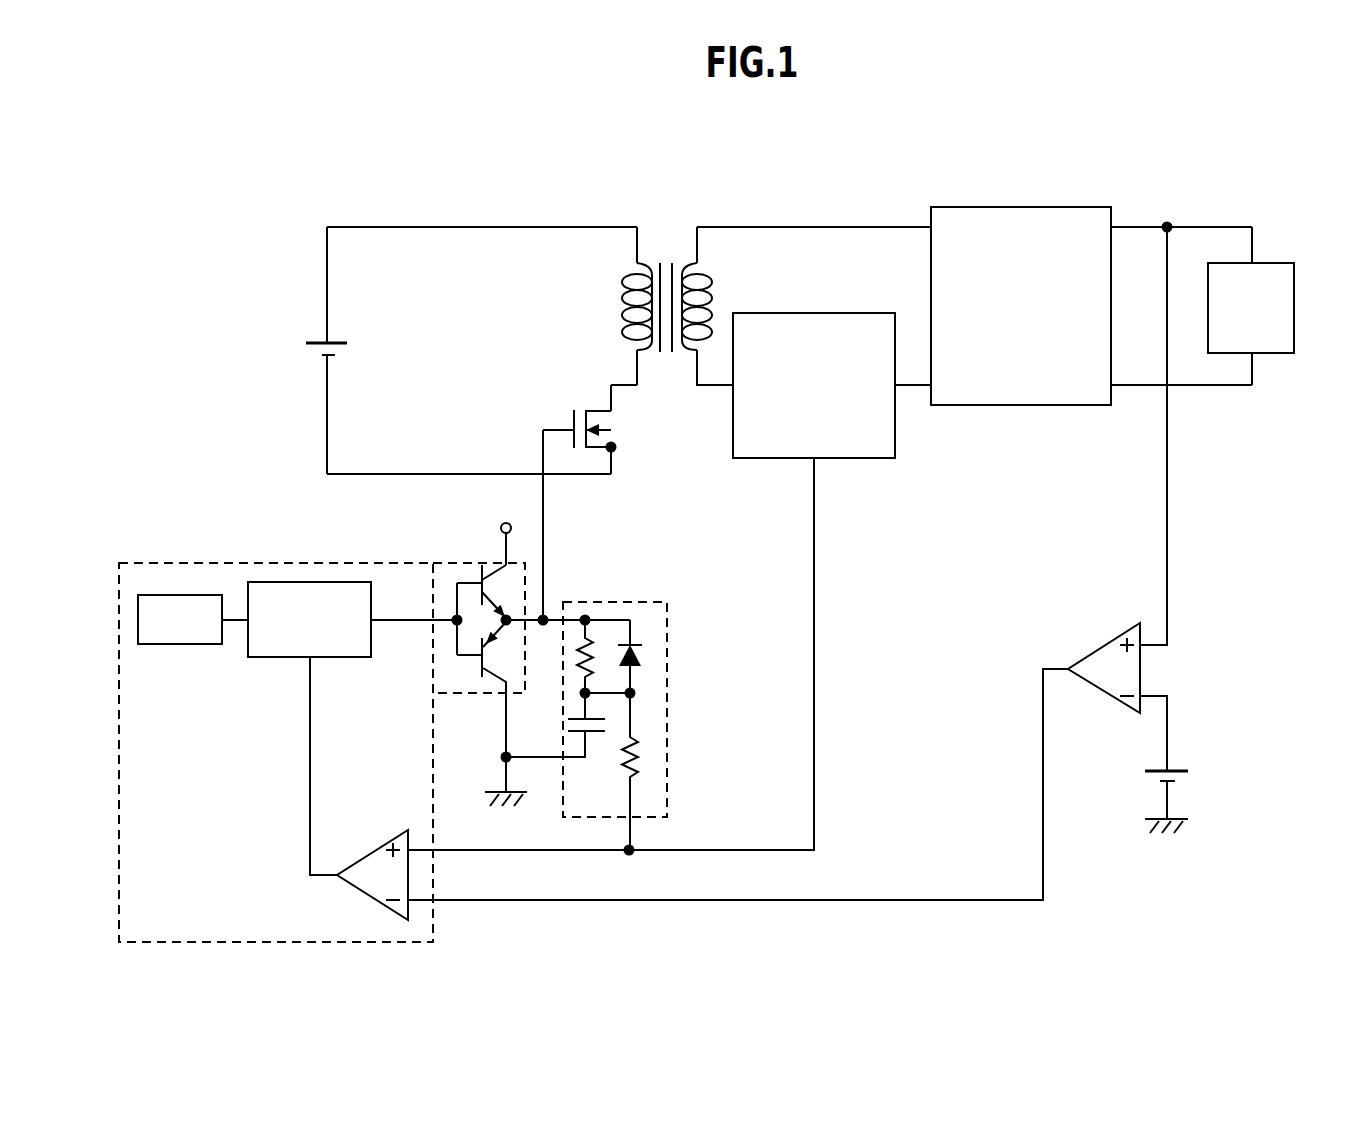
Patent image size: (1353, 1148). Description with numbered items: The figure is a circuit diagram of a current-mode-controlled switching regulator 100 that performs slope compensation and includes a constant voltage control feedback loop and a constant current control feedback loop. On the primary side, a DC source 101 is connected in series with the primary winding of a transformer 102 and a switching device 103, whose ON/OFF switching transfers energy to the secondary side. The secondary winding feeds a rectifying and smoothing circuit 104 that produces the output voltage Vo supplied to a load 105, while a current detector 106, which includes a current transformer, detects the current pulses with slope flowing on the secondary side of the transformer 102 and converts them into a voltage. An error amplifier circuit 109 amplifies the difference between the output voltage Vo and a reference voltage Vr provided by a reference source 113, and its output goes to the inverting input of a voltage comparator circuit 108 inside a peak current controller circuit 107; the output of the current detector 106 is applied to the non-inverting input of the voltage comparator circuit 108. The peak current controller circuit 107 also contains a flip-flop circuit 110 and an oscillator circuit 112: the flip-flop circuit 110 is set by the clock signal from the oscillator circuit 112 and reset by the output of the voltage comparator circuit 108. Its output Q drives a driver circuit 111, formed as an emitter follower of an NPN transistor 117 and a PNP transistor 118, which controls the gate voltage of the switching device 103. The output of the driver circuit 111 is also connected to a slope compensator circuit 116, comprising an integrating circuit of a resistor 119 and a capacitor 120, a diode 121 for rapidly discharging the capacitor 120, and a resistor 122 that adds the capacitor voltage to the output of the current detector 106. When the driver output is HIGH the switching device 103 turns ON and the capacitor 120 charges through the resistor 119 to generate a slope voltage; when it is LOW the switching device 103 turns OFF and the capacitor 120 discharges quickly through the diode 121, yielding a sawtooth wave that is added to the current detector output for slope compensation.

The switching regulator 100 is at (941, 131).
The DC power source 101 is at (306, 341).
The transformer 102 is at (657, 262).
The switching device 103 is at (583, 412).
The rectifying and smoothing circuit 104 is at (1027, 207).
The load 105 is at (1275, 263).
The current detector 106 is at (813, 312).
The peak current controller circuit 107 is at (177, 577).
The voltage comparator circuit 108 is at (369, 849).
The error amplifier circuit 109 is at (1095, 646).
The flip-flop circuit 110 is at (282, 660).
The driver circuit 111 is at (446, 585).
The oscillator circuit 112 is at (183, 646).
The reference voltage source 113 is at (1180, 770).
The slope compensator circuit 116 is at (637, 598).
The NPN transistor 117 is at (500, 563).
The PNP transistor 118 is at (498, 681).
The resistor 119 is at (590, 640).
The capacitor 120 is at (597, 733).
The diode 121 is at (643, 653).
The resistor 122 is at (643, 750).